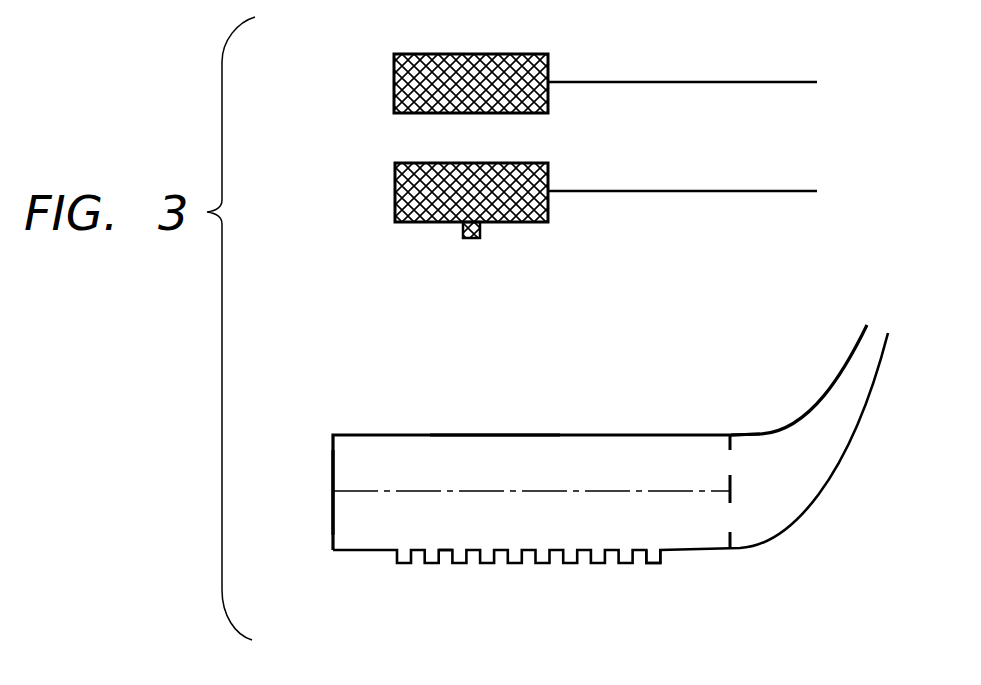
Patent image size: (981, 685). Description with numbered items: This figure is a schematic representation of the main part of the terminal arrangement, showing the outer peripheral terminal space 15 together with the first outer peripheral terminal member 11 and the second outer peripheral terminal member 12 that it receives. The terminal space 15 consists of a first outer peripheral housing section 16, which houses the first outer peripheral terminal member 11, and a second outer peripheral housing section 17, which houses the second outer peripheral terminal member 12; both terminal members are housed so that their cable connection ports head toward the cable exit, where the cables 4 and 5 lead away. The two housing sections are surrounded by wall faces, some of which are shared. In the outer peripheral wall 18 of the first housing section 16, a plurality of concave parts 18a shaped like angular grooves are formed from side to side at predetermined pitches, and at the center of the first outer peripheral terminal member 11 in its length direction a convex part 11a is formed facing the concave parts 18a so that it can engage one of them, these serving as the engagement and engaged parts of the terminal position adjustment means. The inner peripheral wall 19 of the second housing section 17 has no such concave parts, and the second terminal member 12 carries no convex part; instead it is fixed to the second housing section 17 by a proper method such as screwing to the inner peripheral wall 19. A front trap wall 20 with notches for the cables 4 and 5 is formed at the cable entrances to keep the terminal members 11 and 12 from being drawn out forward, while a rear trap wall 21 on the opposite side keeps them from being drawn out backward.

The cable 4 is at (695, 191).
The cable 5 is at (695, 82).
The first outer peripheral terminal member 11 is at (395, 180).
The convex part 11a is at (471, 238).
The second outer peripheral terminal member 12 is at (394, 71).
The outer peripheral terminal space 15 is at (605, 456).
The first outer peripheral housing section 16 is at (381, 535).
The second outer peripheral housing section 17 is at (680, 452).
The outer peripheral wall 18 is at (678, 551).
The concave parts 18a is at (458, 566).
The inner peripheral wall 19 is at (540, 435).
The front trap wall 20 is at (731, 500).
The rear trap wall 21 is at (330, 465).